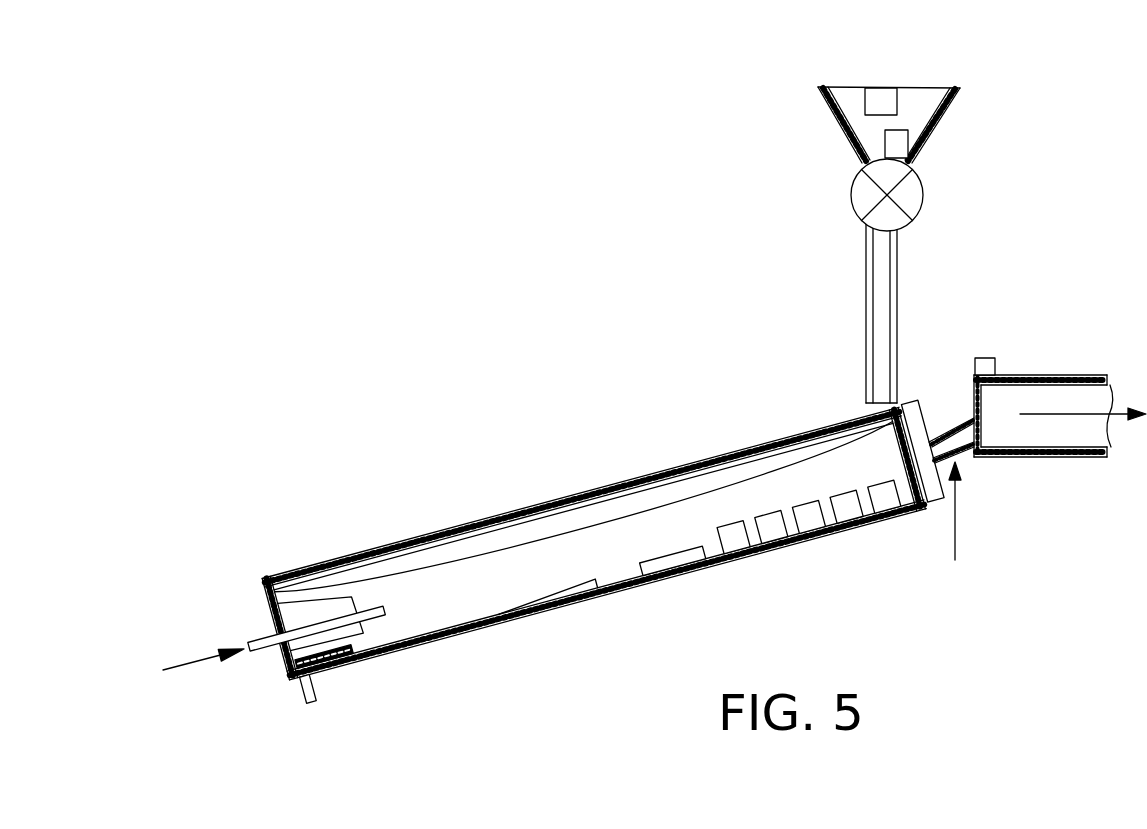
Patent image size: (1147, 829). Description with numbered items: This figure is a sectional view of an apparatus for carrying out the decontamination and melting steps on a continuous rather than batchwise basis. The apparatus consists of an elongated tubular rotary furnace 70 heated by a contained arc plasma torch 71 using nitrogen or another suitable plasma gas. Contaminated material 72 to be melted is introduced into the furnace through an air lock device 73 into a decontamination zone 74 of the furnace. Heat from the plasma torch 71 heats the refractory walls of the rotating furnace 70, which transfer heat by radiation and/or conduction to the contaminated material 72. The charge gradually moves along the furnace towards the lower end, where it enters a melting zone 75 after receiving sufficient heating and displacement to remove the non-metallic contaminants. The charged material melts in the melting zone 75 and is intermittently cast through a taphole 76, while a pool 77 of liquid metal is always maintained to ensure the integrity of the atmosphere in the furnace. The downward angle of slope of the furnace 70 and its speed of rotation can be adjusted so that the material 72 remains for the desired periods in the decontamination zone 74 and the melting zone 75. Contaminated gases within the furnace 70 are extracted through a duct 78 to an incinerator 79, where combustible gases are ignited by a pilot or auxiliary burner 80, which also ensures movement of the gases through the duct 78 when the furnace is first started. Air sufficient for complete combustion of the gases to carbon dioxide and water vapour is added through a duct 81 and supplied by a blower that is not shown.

The elongated tubular rotary furnace 70 is at (568, 497).
The contained arc plasma torch 71 is at (254, 637).
The contaminated material 72 is at (882, 87).
The air lock device 73 is at (905, 194).
The decontamination zone 74 is at (832, 495).
The melting zone 75 is at (512, 595).
The taphole 76 is at (300, 688).
The pool of liquid metal 77 is at (327, 664).
The duct 78 is at (944, 423).
The incinerator 79 is at (1056, 375).
The pilot or auxiliary burner 80 is at (978, 356).
The duct 81 is at (957, 503).